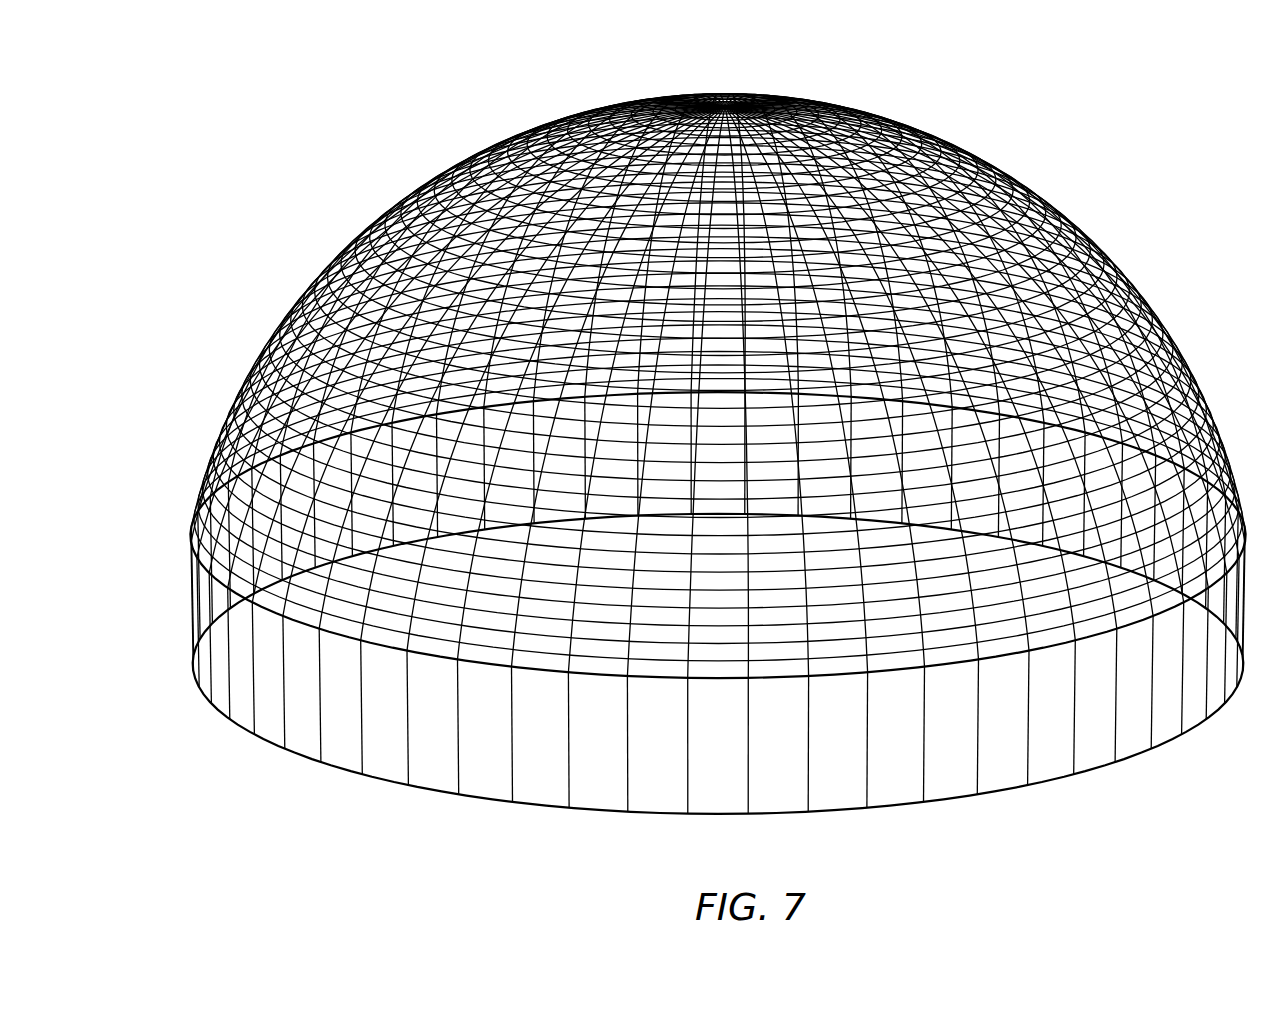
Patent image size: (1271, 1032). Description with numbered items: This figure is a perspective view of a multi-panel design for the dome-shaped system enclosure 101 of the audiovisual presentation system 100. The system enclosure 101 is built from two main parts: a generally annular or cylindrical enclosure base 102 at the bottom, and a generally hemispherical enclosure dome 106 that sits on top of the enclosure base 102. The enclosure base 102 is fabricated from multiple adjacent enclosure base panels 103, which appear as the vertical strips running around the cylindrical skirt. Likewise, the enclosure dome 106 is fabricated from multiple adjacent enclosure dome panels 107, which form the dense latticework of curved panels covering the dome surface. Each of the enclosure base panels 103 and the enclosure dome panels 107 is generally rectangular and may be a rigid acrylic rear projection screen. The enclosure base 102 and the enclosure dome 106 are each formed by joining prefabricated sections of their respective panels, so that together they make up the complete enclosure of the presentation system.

The audiovisual presentation system 100 is at (298, 86).
The system enclosure 101 is at (394, 156).
The enclosure base 102 is at (1072, 785).
The enclosure base panels 103 is at (820, 786).
The enclosure dome 106 is at (1048, 176).
The enclosure dome panels 107 is at (1155, 300).